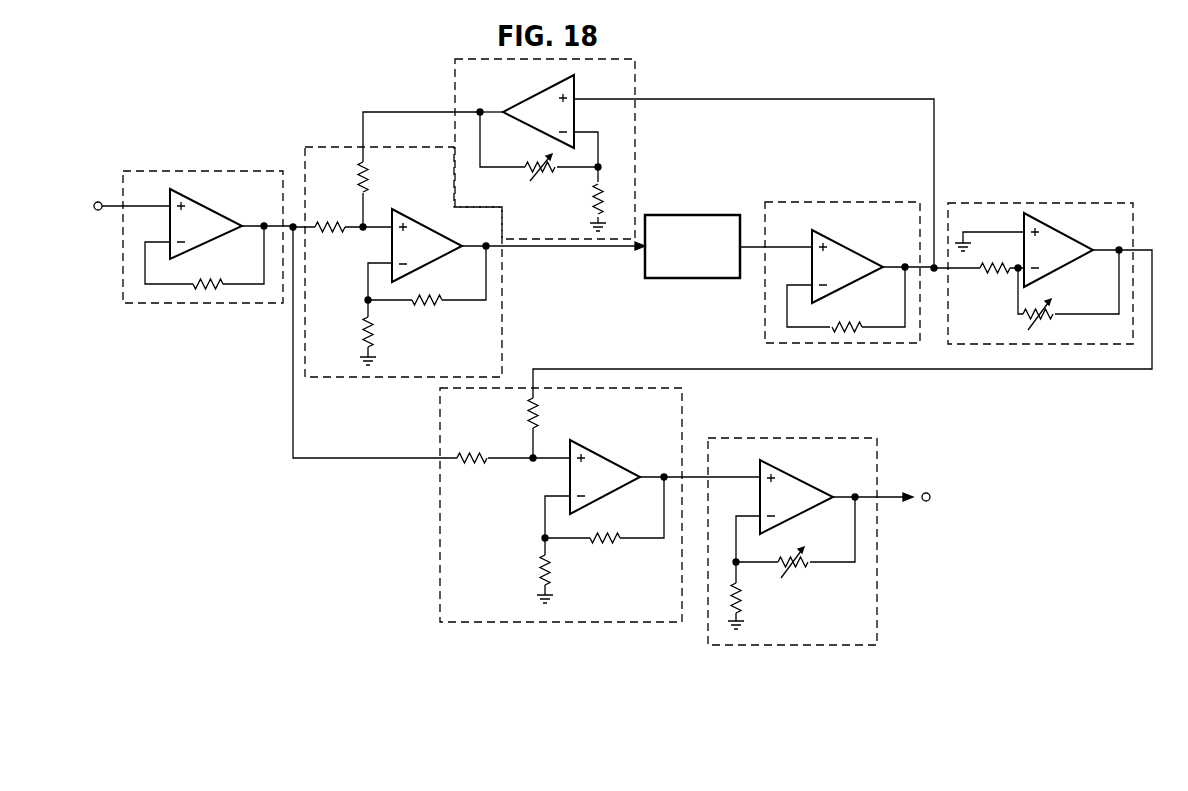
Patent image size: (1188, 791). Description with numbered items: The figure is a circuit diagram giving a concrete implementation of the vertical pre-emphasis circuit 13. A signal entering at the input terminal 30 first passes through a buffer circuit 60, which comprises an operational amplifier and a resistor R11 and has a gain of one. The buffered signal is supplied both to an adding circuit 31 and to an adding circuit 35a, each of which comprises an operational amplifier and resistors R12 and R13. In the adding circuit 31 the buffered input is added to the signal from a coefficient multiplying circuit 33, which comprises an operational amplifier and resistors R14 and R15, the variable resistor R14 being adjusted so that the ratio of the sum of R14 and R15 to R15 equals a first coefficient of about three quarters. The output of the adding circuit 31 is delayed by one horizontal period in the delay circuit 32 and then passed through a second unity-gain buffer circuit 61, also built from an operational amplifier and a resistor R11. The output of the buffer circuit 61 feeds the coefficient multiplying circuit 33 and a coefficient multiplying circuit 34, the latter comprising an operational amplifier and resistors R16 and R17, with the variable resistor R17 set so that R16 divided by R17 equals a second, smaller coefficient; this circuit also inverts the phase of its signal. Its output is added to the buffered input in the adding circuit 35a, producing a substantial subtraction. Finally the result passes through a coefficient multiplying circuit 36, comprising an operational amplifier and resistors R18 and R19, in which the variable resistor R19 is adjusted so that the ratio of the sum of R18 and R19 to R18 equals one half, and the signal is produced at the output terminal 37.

The vertical pre-emphasis circuit 13 is at (747, 83).
The input terminal 30 is at (98, 201).
The adding circuit 31 is at (469, 348).
The 1H delay circuit 32 is at (688, 279).
The coefficient multiplying circuit 33 is at (587, 149).
The coefficient multiplying circuit 34 is at (842, 278).
The adding circuit 35a is at (440, 503).
The coefficient multiplying circuit 36 is at (810, 521).
The output terminal 37 is at (926, 492).
The buffer circuit 60 is at (495, 233).
The buffer circuit 61 is at (810, 201).
The resistor R11 is at (528, 295).
The resistor R12 is at (443, 312).
The resistor R13 is at (503, 280).
The variable resistor R14 is at (548, 176).
The resistor R15 is at (577, 204).
The resistor R16 is at (994, 280).
The variable resistor R17 is at (1047, 321).
The resistor R18 is at (754, 598).
The variable resistor R19 is at (802, 570).